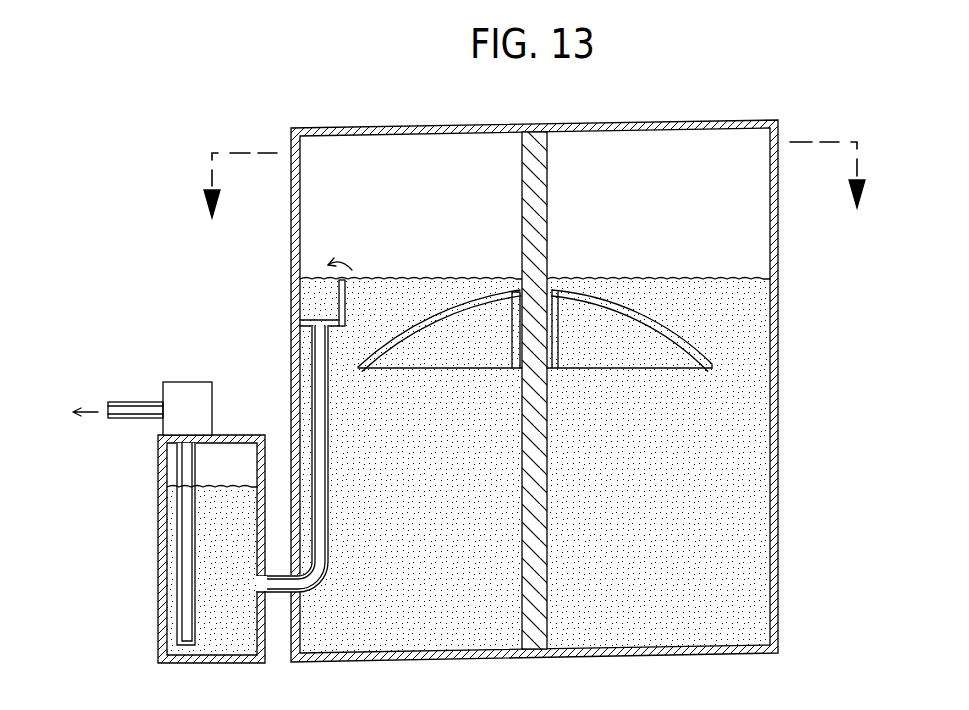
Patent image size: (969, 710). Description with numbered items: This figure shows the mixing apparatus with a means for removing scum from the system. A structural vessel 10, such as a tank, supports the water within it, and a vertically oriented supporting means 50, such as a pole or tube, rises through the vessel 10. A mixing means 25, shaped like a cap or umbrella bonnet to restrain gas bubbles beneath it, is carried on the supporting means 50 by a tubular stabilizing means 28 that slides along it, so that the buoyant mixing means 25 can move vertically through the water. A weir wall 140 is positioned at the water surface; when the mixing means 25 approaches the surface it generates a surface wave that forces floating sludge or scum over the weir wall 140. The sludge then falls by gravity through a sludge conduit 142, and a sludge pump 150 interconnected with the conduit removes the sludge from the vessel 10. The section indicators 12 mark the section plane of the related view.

The vessel 10 is at (778, 548).
The section line of FIG. 12 is at (536, 204).
The mixing means 25 is at (640, 310).
The stabilizing means 28 is at (560, 318).
The supporting means 50 is at (548, 198).
The weir wall 140 is at (347, 300).
The sludge conduit 142 is at (330, 444).
The sludge pump 150 is at (177, 393).